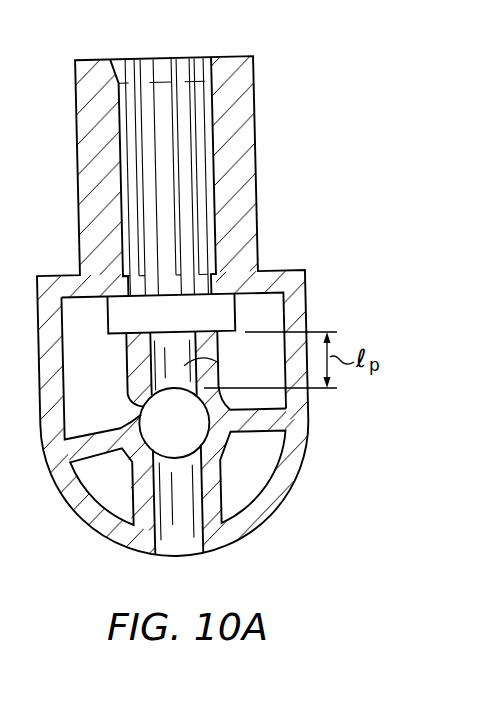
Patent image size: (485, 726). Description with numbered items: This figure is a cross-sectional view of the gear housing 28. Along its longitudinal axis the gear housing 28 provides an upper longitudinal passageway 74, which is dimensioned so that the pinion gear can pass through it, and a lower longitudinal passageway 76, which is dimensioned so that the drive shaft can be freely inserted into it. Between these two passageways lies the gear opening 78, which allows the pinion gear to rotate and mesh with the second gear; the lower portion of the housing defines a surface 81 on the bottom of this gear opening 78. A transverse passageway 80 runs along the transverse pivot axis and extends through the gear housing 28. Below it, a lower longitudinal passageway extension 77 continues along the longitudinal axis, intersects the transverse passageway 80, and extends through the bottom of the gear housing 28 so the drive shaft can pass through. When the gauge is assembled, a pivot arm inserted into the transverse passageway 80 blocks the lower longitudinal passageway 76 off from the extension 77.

The gear housing 28 is at (279, 190).
The upper longitudinal passageway 74 is at (165, 68).
The lower longitudinal passageway 76 is at (220, 371).
The lower longitudinal passageway extension 77 is at (158, 542).
The gear opening 78 is at (218, 310).
The transverse passageway 80 is at (140, 418).
The surface 81 is at (114, 331).